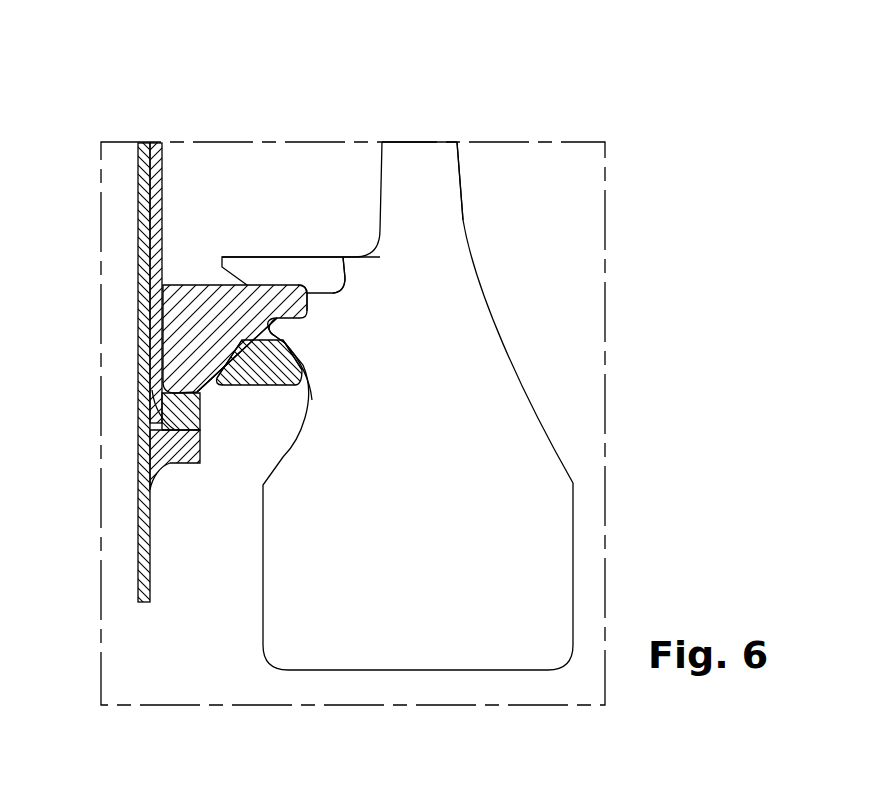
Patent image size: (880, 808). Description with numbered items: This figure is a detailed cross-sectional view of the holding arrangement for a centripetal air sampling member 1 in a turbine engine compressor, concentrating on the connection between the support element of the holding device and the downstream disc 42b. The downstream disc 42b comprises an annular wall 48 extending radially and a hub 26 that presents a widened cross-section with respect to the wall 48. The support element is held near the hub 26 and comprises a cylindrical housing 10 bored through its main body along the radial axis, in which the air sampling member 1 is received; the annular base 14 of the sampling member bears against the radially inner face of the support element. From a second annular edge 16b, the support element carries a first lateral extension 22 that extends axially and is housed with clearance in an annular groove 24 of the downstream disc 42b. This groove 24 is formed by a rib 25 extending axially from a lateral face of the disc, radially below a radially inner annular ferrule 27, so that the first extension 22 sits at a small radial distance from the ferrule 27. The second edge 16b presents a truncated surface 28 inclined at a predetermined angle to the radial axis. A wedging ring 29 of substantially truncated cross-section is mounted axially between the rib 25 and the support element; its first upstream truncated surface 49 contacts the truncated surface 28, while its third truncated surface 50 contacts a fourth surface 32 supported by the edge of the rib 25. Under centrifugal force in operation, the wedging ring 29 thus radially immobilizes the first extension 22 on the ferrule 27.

The air sampling member 1 is at (118, 193).
The cylindrical housing 10 is at (165, 315).
The annular base 14 is at (196, 478).
The second annular edge 16b is at (222, 368).
The first lateral extension 22 is at (275, 302).
The annular groove 24 is at (343, 257).
The rib 25 is at (295, 338).
The hub 26 is at (517, 543).
The radially inner annular ferrule 27 is at (275, 268).
The truncated surface 28 is at (237, 358).
The wedging ring 29 is at (262, 377).
The fourth surface 32 is at (286, 368).
The downstream disc 42b is at (437, 195).
The annular wall 48 is at (422, 167).
The first upstream truncated surface 49 is at (206, 358).
The third truncated surface 50 is at (303, 362).